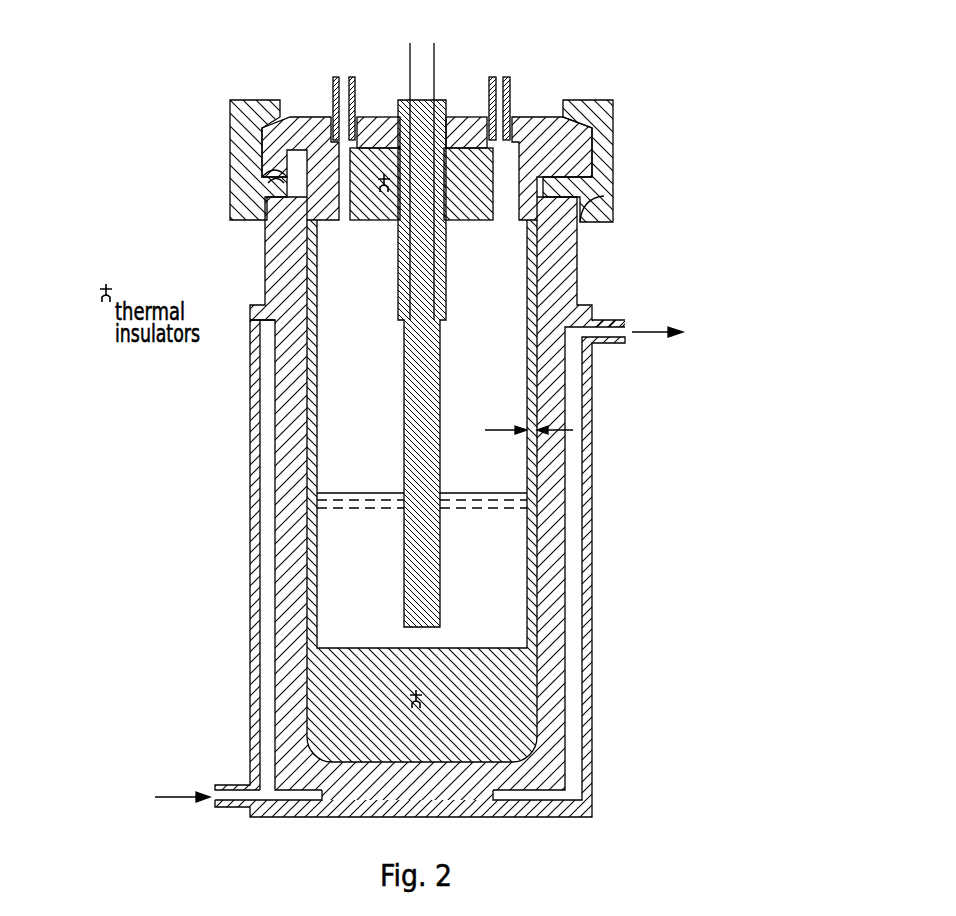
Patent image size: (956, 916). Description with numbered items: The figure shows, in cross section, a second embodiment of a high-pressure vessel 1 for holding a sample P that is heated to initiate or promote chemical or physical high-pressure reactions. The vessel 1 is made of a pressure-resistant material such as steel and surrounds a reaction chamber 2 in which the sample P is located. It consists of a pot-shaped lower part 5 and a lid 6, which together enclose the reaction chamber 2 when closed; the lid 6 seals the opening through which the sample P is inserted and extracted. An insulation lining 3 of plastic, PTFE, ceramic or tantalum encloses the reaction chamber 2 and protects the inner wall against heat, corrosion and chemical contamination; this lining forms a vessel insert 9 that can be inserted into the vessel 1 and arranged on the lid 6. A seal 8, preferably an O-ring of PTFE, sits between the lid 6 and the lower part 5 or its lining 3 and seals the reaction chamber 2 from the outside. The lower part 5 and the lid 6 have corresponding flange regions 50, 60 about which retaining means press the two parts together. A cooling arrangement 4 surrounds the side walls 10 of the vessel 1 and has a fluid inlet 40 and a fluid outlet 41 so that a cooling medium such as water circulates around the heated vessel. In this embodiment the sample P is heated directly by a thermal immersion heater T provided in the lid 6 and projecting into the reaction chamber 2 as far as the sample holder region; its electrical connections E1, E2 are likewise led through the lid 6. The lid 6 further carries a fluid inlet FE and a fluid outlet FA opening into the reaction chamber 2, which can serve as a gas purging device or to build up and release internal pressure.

The high-pressure vessel 1 is at (692, 447).
The reaction chamber 2 is at (370, 427).
The insulation lining 3 is at (486, 455).
The cooling arrangement 4 is at (247, 527).
The lower part 5 is at (568, 668).
The lid part 6 is at (578, 158).
The seal 8 is at (270, 175).
The vessel insert 9 is at (530, 512).
The side walls 10 is at (558, 387).
The fluid inlet 40 is at (215, 805).
The fluid outlet 41 is at (620, 322).
The flange region 50 is at (598, 200).
The flange region 60 is at (578, 127).
The thermal immersion heater T is at (441, 398).
The sample P is at (422, 530).
The electrical connection E1 is at (408, 53).
The electrical connection E2 is at (436, 53).
The fluid inlet FE is at (332, 88).
The fluid outlet FA is at (511, 88).